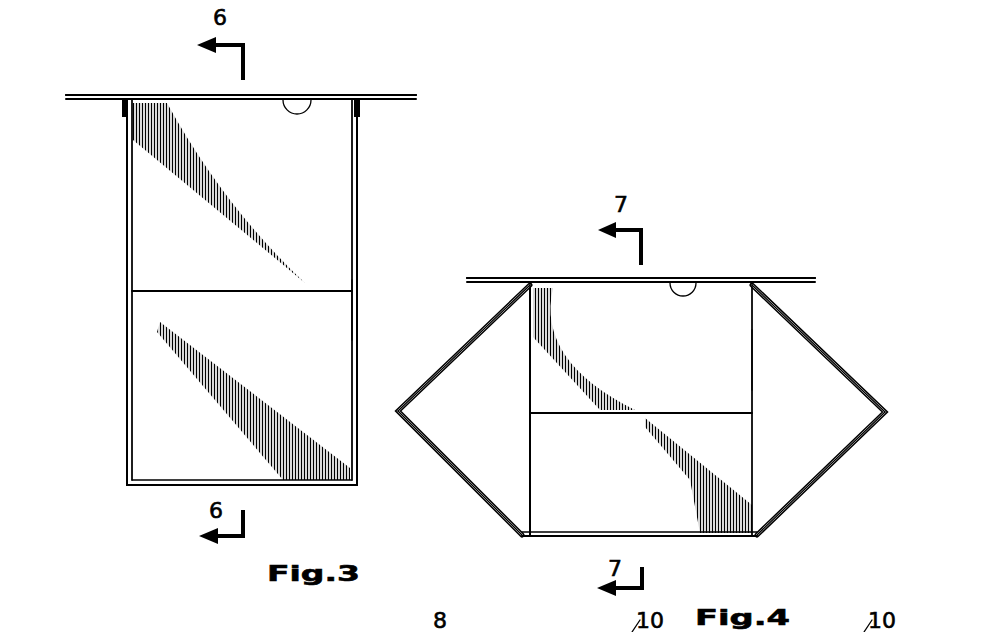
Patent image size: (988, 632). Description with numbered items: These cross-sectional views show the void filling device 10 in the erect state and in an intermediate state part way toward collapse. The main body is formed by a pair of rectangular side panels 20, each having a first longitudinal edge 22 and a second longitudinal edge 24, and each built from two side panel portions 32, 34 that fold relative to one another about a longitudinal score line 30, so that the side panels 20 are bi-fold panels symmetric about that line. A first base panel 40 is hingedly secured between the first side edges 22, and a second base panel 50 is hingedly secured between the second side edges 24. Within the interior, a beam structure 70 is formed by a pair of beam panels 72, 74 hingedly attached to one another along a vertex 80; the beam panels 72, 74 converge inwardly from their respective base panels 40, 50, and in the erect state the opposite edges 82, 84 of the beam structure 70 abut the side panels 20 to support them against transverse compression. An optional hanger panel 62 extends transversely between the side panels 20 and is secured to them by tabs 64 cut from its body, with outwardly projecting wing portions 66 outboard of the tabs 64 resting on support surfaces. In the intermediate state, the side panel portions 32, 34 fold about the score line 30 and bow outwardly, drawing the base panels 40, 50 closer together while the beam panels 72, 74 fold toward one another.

In FIG. 4, the void filling device 10 is at (478, 74).
In FIG. 3, the side panel 20 is at (382, 176).
In FIG. 4, the side panel 20 is at (477, 505).
In FIG. 3, the first longitudinal edge 22 is at (128, 97).
In FIG. 3, the second longitudinal edge 24 is at (128, 484).
In FIG. 4, the score line 30 is at (397, 409).
In FIG. 4, the side panel portion 32 is at (432, 384).
In FIG. 4, the side panel portion 34 is at (457, 468).
In FIG. 3, the first base panel 40 is at (310, 100).
In FIG. 4, the first base panel 40 is at (703, 277).
In FIG. 3, the second base panel 50 is at (264, 487).
In FIG. 4, the second base panel 50 is at (690, 539).
In FIG. 3, the hanger panel 62 is at (180, 97).
In FIG. 4, the hanger panel 62 is at (598, 277).
In FIG. 3, the tab 64 is at (125, 117).
In FIG. 3, the wing portion 66 is at (104, 100).
In FIG. 4, the wing portion 66 is at (511, 277).
In FIG. 3, the beam structure 70 is at (302, 318).
In FIG. 4, the beam structure 70 is at (707, 360).
In FIG. 3, the beam panel 72 is at (263, 189).
In FIG. 4, the beam panel 72 is at (601, 359).
In FIG. 3, the beam panel 74 is at (259, 392).
In FIG. 4, the beam panel 74 is at (603, 491).
In FIG. 3, the vertex 80 is at (200, 292).
In FIG. 4, the vertex 80 is at (700, 414).
In FIG. 3, the beam structure edge 82 is at (127, 319).
In FIG. 4, the beam structure edge 82 is at (530, 370).
In FIG. 3, the beam structure edge 84 is at (357, 208).
In FIG. 4, the beam structure edge 84 is at (753, 394).